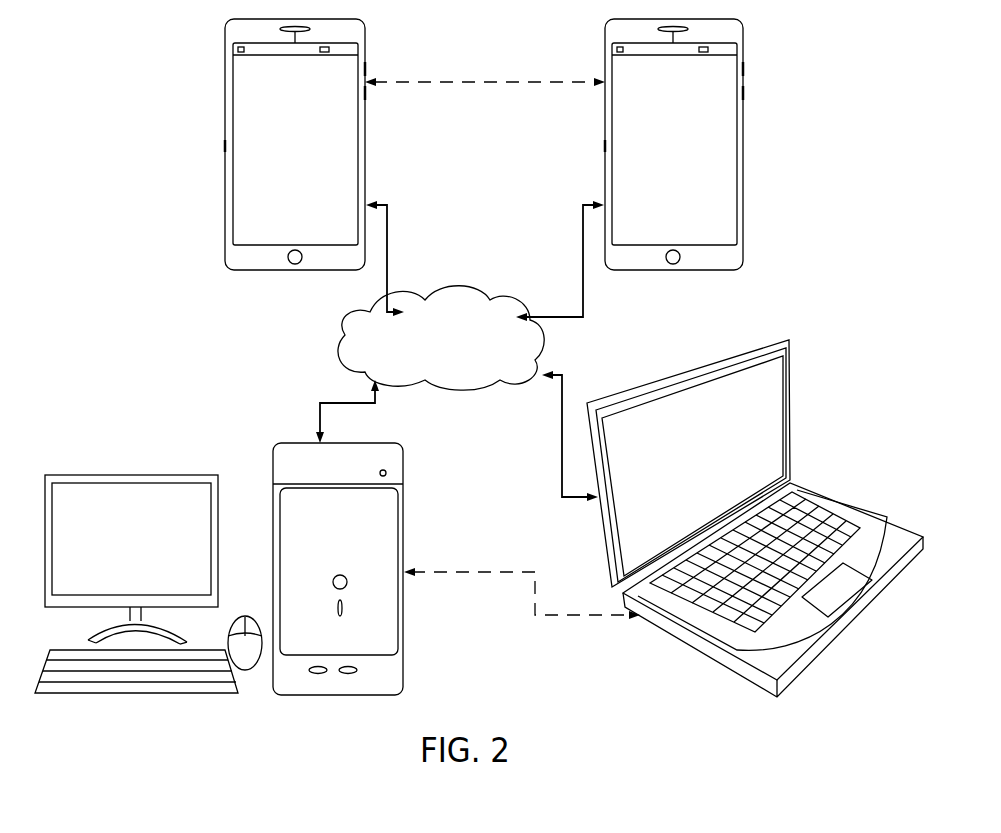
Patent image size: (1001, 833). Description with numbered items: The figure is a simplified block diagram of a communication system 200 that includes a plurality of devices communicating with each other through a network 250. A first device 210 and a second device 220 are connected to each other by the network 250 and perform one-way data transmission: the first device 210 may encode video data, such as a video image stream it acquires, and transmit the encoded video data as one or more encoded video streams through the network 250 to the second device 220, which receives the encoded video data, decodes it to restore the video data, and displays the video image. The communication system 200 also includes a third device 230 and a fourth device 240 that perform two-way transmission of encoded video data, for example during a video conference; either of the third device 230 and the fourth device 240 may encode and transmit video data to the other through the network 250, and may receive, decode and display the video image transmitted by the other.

The communication system 200 is at (812, 114).
The first device 210 is at (790, 400).
The second device 220 is at (403, 653).
The third device 230 is at (225, 105).
The fourth device 240 is at (605, 105).
The network 250 is at (439, 369).